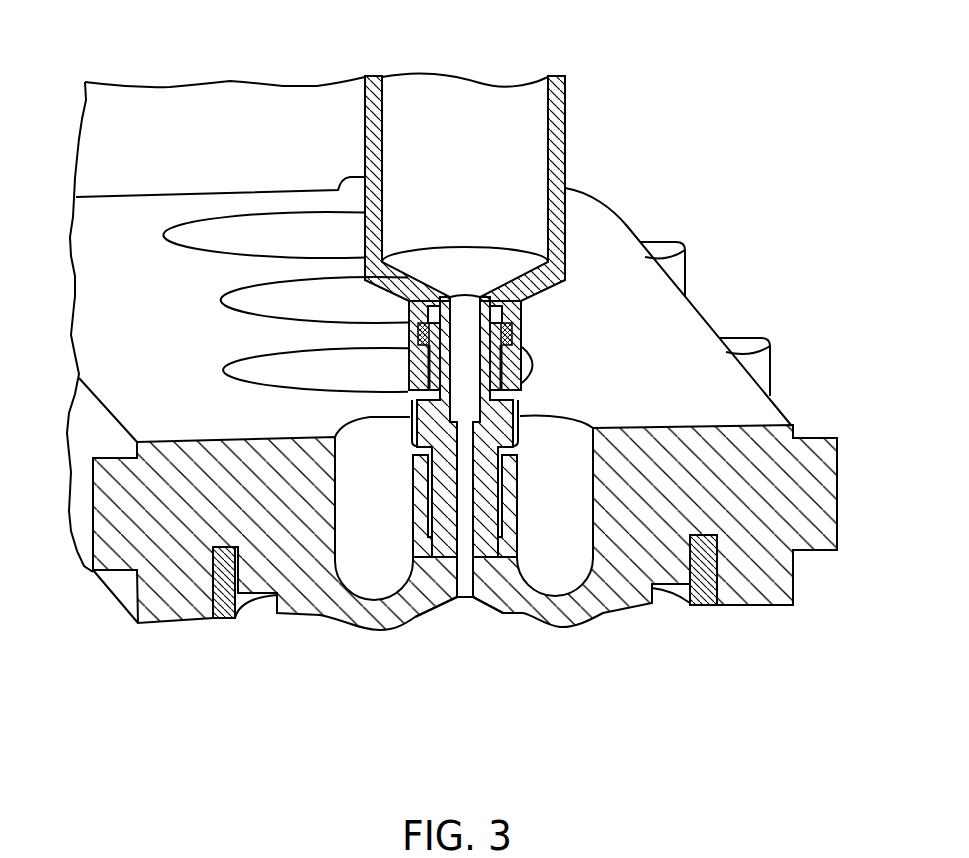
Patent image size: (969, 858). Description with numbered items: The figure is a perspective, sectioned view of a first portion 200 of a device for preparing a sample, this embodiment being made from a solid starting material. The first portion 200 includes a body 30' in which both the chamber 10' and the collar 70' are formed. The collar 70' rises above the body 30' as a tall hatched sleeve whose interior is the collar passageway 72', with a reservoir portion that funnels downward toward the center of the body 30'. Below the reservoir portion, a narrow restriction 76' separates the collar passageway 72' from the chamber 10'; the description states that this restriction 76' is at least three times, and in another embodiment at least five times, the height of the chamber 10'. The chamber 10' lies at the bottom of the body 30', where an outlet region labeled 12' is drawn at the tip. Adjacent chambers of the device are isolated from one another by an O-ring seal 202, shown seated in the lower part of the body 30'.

The first portion 200 is at (723, 45).
The body 30' is at (466, 513).
The collar 70' is at (436, 167).
The collar passageway 72' is at (465, 148).
The restriction 76' is at (511, 446).
The chamber 10' is at (436, 629).
The outlet 12' is at (480, 629).
The O-ring seal 202 is at (705, 598).